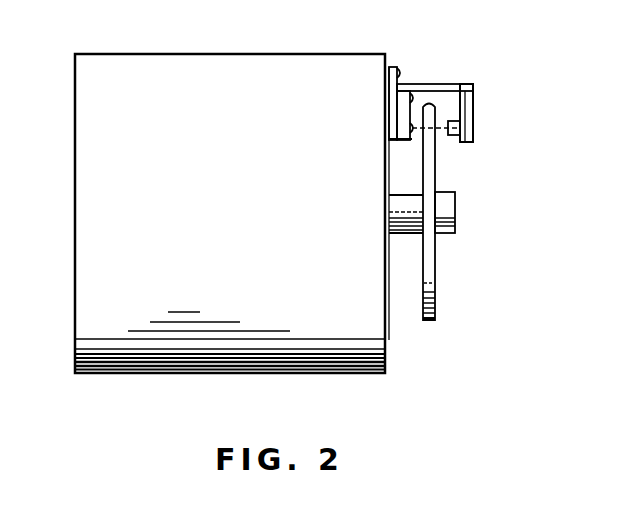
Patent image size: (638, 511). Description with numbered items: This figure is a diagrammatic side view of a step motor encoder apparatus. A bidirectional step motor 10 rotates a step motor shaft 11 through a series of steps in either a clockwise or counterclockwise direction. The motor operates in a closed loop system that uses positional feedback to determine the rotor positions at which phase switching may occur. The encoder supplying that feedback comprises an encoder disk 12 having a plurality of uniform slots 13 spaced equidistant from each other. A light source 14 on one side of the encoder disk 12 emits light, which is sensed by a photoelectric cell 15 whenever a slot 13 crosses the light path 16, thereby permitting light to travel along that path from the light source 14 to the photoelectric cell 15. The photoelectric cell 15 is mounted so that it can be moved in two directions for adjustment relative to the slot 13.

The bidirectional step motor 10 is at (204, 188).
The step motor shaft 11 is at (445, 234).
The encoder disk 12 is at (438, 181).
The slots 13 is at (433, 120).
The light source 14 is at (453, 137).
The photoelectric cell 15 is at (411, 140).
The light path 16 is at (412, 124).